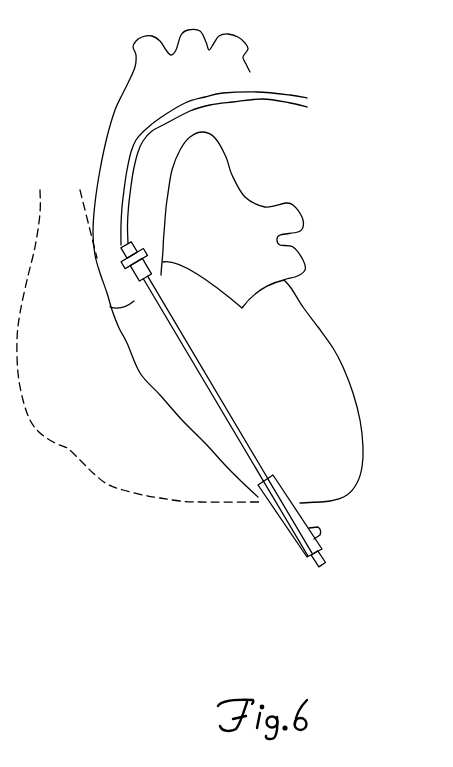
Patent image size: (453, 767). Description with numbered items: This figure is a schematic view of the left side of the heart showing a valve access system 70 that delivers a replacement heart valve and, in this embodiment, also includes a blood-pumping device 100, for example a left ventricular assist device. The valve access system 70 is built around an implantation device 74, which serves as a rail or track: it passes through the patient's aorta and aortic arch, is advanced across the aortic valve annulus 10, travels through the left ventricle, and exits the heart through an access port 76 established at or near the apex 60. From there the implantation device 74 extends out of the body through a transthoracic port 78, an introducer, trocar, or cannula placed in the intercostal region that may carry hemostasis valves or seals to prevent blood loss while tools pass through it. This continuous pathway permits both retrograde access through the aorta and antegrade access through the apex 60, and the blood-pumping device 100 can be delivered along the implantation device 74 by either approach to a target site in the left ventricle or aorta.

The aortic valve annulus 10 is at (210, 332).
The apex 60 is at (291, 534).
The valve access system 70 is at (320, 129).
The implantation device 74 is at (202, 371).
The access port 76 is at (300, 505).
The transthoracic port 78 is at (300, 550).
The blood-pumping device 100 is at (129, 272).